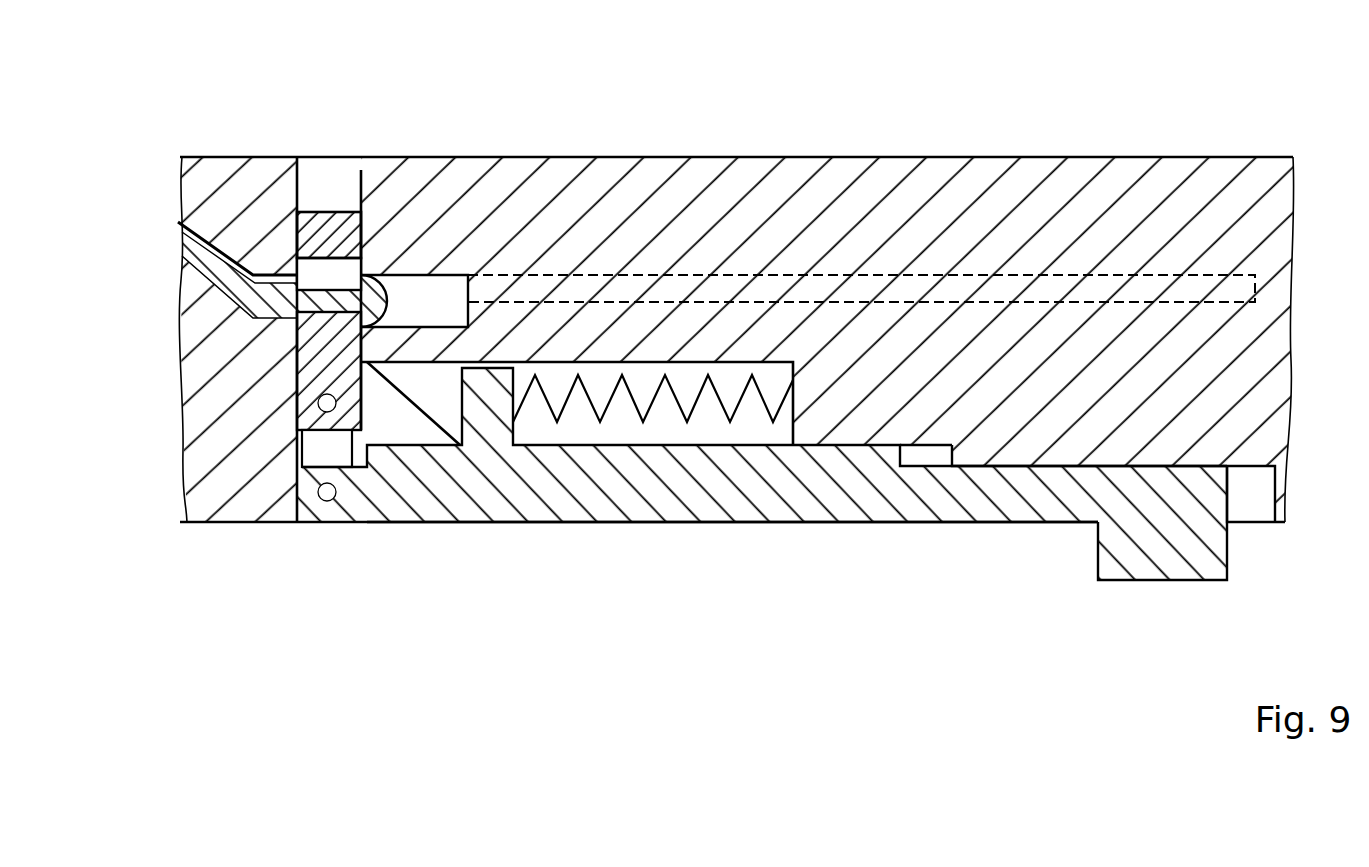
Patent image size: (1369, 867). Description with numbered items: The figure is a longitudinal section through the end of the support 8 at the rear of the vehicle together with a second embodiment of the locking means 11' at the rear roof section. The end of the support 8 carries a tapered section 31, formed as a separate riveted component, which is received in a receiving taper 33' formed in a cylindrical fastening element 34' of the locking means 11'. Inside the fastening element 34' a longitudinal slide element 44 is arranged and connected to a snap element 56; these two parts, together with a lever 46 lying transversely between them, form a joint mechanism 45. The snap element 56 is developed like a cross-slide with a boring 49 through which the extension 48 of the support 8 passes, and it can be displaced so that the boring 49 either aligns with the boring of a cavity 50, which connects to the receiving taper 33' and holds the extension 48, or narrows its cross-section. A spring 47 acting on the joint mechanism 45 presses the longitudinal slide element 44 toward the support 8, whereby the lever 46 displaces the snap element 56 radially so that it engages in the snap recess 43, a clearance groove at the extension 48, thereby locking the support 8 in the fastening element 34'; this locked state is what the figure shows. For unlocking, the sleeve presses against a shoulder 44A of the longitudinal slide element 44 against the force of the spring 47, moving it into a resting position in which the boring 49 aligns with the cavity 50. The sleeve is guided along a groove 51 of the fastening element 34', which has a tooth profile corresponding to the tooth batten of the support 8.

The support 8 is at (166, 318).
The locking means 11' is at (732, 608).
The tapered section 31 is at (196, 272).
The receiving taper 33' is at (237, 145).
The cylindrical fastening element 34' is at (737, 268).
The snap recess 43 is at (277, 305).
The longitudinal slide element 44 is at (400, 507).
The shoulder 44A is at (1119, 560).
The joint mechanism 45 is at (598, 538).
The lever 46 is at (305, 447).
The spring 47 is at (685, 420).
The extension 48 is at (377, 298).
The boring 49 is at (303, 278).
The cavity 50 is at (445, 290).
The groove 51 is at (1080, 275).
The snap element 56 is at (327, 212).